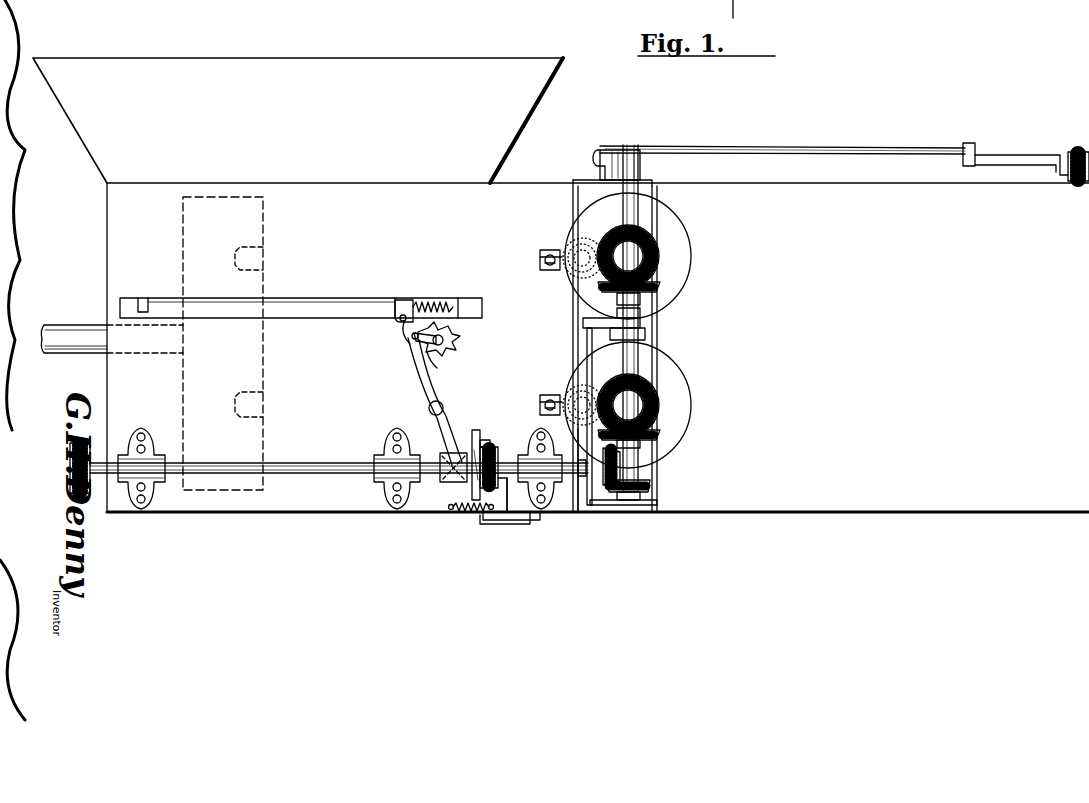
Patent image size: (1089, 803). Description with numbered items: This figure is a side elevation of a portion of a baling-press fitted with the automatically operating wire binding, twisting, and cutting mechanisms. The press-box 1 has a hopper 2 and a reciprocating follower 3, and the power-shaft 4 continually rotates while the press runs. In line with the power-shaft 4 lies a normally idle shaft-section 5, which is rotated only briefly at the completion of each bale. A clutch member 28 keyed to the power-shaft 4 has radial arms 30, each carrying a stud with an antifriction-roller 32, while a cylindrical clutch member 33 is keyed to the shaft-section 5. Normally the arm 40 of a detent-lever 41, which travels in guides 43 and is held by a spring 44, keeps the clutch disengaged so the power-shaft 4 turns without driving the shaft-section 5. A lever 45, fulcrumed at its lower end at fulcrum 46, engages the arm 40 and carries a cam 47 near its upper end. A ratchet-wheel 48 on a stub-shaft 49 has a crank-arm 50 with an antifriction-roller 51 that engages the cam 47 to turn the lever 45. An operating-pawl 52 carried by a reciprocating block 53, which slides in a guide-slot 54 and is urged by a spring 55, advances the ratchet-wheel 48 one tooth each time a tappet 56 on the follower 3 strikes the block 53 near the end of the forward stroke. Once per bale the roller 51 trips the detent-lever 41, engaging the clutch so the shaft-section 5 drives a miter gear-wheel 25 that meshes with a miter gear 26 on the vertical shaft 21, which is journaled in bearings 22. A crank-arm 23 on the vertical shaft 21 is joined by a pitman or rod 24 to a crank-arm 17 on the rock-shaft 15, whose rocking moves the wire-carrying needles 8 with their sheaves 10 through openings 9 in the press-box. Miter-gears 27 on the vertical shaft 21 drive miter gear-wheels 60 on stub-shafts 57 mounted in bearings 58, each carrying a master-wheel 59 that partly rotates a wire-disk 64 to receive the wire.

The press-box 1 is at (565, 347).
The hopper 2 is at (298, 120).
The reciprocating follower 3 is at (236, 306).
The power-shaft 4 is at (325, 463).
The shaft-section 5 is at (575, 500).
The wire-carrying arms or needles 8 is at (551, 252).
The openings 9 is at (540, 258).
The wire-carrying revoluble sheave 10 is at (540, 266).
The rock-shaft 15 is at (1070, 182).
The crank-arm 17 is at (1007, 156).
The vertical shaft 21 is at (640, 212).
The bearings 22 is at (583, 322).
The crank-arm 23 is at (642, 165).
The pitman or rod 24 is at (797, 146).
The miter gear-wheel 25 is at (622, 462).
The miter gear 26 is at (652, 485).
The miter-gears 27 is at (598, 290).
The clutch member 28 is at (448, 482).
The radial arms 30 is at (476, 430).
The antifriction-roller 32 is at (490, 441).
The clutch member 33 is at (498, 455).
The arm 40 is at (512, 495).
The detent-lever 41 is at (492, 524).
The guides 43 is at (522, 520).
The spring 44 is at (458, 512).
The lever 45 is at (420, 384).
The fulcrum 46 is at (443, 407).
The cam 47 is at (438, 362).
The ratchet-wheel 48 is at (462, 336).
The stub-shaft 49 is at (456, 341).
The crank-arm 50 is at (412, 346).
The antifriction-roller 51 is at (414, 342).
The operating-pawl 52 is at (410, 335).
The reciprocating block 53 is at (406, 300).
The guide-slot 54 is at (380, 300).
The spring 55 is at (450, 300).
The tappet 56 is at (146, 302).
The stub-shafts 57 is at (640, 264).
The bearings 58 is at (573, 200).
The master-wheel 59 is at (690, 250).
The miter gear-wheel 60 is at (652, 248).
The wire-disk 64 is at (594, 238).